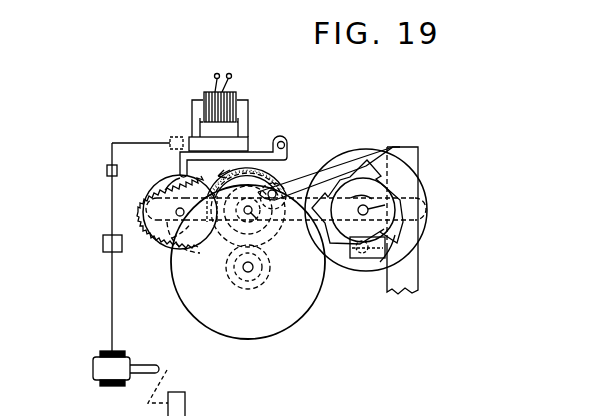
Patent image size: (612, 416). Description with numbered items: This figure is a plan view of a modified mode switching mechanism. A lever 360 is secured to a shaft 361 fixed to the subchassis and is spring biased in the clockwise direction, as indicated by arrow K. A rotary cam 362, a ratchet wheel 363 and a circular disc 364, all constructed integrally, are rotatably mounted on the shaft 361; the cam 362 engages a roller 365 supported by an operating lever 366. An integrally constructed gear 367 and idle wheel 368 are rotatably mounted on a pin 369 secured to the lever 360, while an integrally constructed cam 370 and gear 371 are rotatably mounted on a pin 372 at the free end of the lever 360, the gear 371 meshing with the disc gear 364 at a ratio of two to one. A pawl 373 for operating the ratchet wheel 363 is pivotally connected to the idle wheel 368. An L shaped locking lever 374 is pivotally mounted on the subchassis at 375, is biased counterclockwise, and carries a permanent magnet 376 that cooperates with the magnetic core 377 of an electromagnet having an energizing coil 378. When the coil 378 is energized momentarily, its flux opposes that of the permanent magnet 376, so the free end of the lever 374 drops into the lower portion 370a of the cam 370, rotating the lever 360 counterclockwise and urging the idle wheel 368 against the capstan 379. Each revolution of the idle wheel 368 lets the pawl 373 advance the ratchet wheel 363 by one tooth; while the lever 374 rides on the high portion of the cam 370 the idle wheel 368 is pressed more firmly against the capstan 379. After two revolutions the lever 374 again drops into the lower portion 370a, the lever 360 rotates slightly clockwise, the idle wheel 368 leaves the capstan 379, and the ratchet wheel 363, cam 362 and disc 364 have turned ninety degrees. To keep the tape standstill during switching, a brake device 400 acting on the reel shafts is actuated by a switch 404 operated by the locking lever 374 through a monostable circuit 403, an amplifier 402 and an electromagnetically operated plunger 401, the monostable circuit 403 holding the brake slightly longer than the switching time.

The lever 360 is at (343, 232).
The shaft 361 is at (376, 207).
The rotary cam 362 is at (398, 230).
The ratchet wheel 363 is at (383, 197).
The circular disc 364 is at (398, 148).
The roller 365 is at (404, 252).
The operating lever 366 is at (418, 284).
The gear 367 is at (210, 250).
The idle wheel 368 is at (286, 174).
The pin 369 is at (286, 256).
The cam 370 is at (141, 214).
The lower portion of the cam 370a is at (168, 187).
The gear 371 is at (142, 197).
The pin 372 is at (161, 246).
The pawl 373 is at (372, 154).
The L shaped locking lever 374 is at (265, 152).
The pivot 375 is at (291, 166).
The permanent magnet 376 is at (224, 144).
The magnetic core 377 is at (192, 104).
The energizing coil 378 is at (213, 86).
The capstan 379 is at (232, 284).
The brake device 400 is at (186, 399).
The electromagnetically operated plunger 401 is at (147, 366).
The amplifier 402 is at (103, 243).
The monostable circuit 403 is at (107, 170).
The switch 404 is at (175, 137).
The arrow K is at (376, 182).